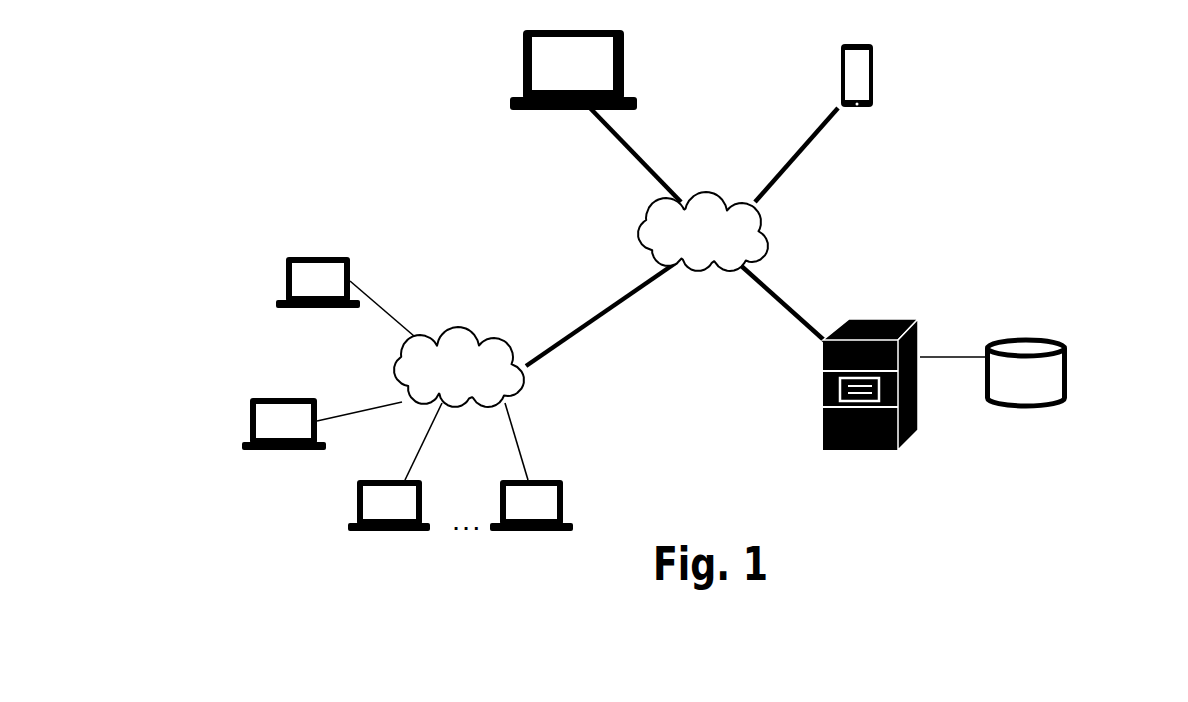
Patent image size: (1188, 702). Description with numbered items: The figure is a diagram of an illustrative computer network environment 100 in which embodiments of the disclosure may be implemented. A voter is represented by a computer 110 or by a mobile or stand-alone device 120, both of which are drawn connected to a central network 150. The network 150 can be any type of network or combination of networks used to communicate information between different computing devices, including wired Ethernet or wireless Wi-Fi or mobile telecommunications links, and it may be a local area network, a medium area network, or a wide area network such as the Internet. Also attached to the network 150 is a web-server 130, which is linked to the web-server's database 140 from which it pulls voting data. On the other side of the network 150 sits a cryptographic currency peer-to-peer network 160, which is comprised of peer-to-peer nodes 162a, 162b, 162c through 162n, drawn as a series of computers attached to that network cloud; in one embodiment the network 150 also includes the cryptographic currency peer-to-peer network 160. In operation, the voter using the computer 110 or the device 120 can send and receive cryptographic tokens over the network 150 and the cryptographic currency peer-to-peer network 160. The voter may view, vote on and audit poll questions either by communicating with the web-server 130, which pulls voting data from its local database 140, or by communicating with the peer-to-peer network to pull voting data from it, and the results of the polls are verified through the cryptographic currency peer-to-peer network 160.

The computer network environment 100 is at (414, 145).
The computer 110 is at (624, 60).
The mobile or stand-alone device 120 is at (873, 60).
The web-server 130 is at (915, 320).
The web-server's database 140 is at (1067, 346).
The network 150 is at (768, 233).
The cryptographic currency peer-to-peer network 160 is at (526, 367).
The peer-to-peer node 162a is at (286, 288).
The peer-to-peer node 162b is at (250, 421).
The peer-to-peer node 162c is at (357, 510).
The peer-to-peer node 162n is at (563, 517).